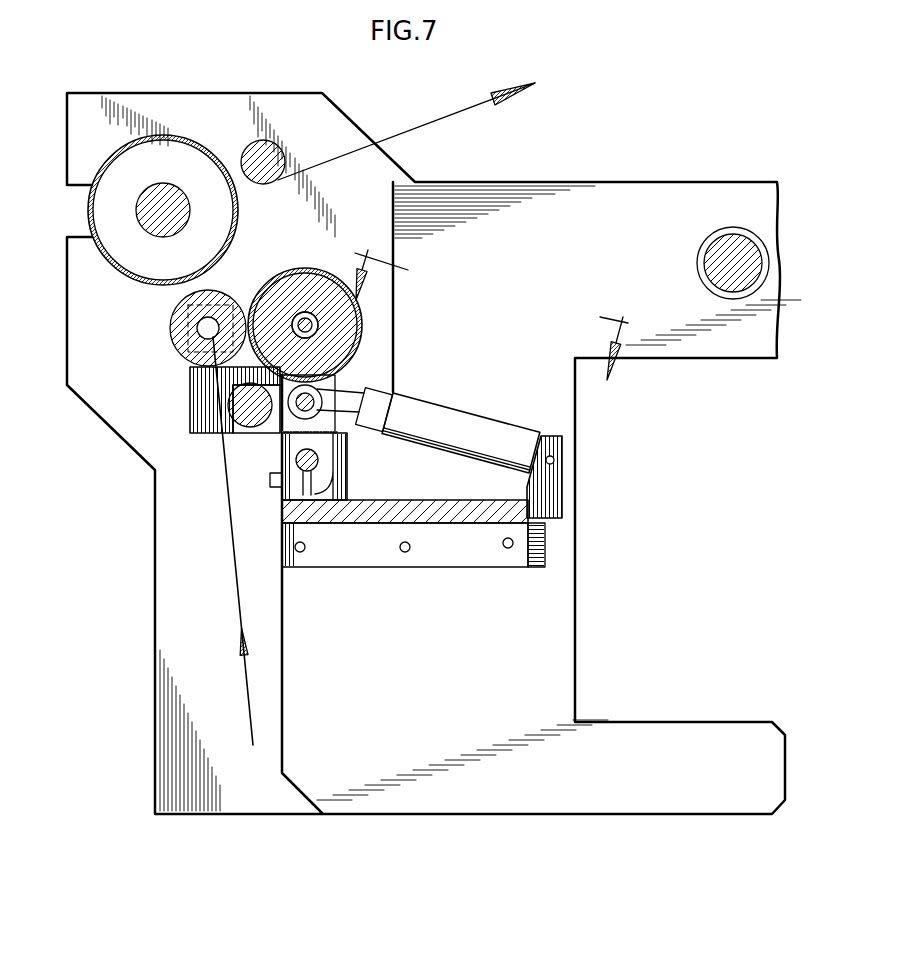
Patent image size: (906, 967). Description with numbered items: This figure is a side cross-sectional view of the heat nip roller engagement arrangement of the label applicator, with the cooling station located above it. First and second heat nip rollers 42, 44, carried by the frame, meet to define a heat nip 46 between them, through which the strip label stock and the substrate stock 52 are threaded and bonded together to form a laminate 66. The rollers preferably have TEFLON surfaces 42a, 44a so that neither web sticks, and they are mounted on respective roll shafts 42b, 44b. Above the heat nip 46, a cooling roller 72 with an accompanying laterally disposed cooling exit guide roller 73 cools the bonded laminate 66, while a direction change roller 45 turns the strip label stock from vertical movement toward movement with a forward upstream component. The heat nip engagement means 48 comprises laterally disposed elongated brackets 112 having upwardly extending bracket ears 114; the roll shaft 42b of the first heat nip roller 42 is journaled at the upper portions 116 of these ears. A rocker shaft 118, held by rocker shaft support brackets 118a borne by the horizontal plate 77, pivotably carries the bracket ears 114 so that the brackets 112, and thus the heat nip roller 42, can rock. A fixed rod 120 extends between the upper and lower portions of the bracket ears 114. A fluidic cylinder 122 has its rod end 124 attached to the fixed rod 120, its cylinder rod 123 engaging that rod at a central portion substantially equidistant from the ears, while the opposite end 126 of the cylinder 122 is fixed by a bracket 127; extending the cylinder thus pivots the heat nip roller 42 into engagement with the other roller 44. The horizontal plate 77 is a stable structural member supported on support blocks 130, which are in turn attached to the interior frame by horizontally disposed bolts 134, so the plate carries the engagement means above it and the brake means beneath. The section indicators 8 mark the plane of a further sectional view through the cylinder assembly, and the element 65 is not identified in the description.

The direction change roller 45 is at (434, 453).
The cooling roller 72 is at (188, 157).
The cooling exit guide roller 73 is at (285, 147).
The first heat nip roller 42 is at (363, 330).
The TEFLON surface 42a is at (305, 270).
The roll shaft 42b is at (320, 323).
The second heat nip roller 44 is at (178, 334).
The laminate 66 is at (176, 297).
The heat nip 46 is at (245, 290).
The TEFLON surface 44a is at (175, 358).
The roll shaft 44b is at (200, 390).
The fixed rod 120 is at (338, 378).
The rod end 124 is at (322, 400).
The fluidic cylinder 122 is at (428, 430).
The heat nip engagement means 48 is at (480, 392).
The opposite end of cylinder 126 is at (530, 455).
The bracket 127 is at (560, 478).
The elongated bracket 112 is at (340, 470).
The rocker shaft 118 is at (320, 458).
The rocker shaft support bracket 118a is at (345, 522).
The horizontal plate 77 is at (432, 512).
The support block 130 is at (330, 550).
The horizontally disposed bolt 134 is at (510, 548).
The substrate stock 52 is at (237, 553).
The pin 65 is at (215, 437).
The upper portion of bracket ear 116 is at (283, 438).
The bracket ear 114 is at (295, 422).
The fluidic cylinder rod 123 is at (280, 470).
The section line 8- 8 is at (491, 302).